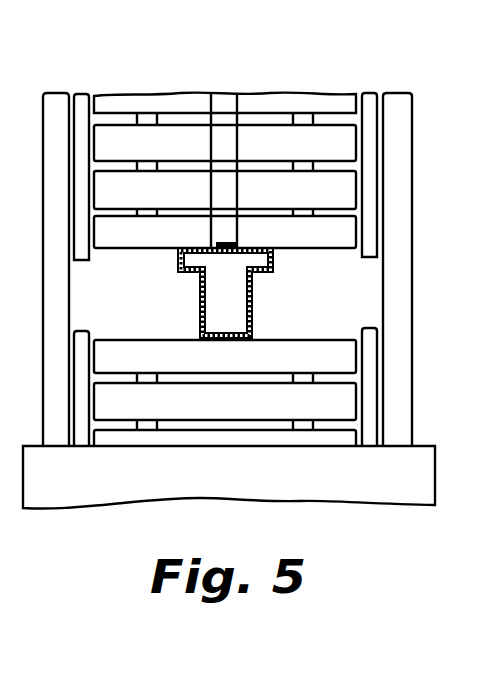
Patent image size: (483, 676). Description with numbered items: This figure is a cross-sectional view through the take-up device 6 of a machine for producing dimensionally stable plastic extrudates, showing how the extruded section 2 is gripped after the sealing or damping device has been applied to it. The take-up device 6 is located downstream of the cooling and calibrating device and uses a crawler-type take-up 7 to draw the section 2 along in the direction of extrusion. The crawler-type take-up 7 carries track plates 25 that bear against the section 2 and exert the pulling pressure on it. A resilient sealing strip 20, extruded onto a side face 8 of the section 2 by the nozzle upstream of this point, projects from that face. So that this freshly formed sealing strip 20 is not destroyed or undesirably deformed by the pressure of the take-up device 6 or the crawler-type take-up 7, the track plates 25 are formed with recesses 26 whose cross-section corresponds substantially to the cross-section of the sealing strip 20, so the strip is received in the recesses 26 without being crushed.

The take-up device 6 is at (198, 71).
The track plates 25 is at (262, 146).
The recesses 26 is at (238, 102).
The sealing strip 20 is at (239, 242).
The section 2 is at (262, 302).
The side face 8 is at (193, 246).
The crawler-type take-up 7 is at (330, 404).